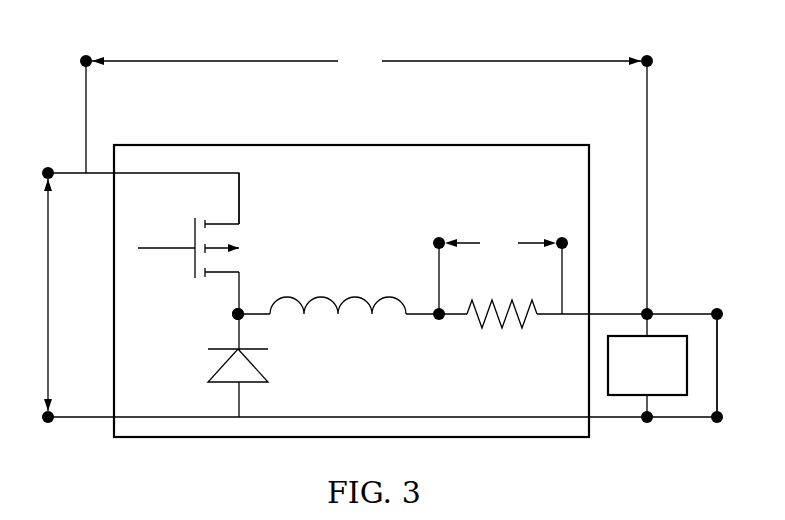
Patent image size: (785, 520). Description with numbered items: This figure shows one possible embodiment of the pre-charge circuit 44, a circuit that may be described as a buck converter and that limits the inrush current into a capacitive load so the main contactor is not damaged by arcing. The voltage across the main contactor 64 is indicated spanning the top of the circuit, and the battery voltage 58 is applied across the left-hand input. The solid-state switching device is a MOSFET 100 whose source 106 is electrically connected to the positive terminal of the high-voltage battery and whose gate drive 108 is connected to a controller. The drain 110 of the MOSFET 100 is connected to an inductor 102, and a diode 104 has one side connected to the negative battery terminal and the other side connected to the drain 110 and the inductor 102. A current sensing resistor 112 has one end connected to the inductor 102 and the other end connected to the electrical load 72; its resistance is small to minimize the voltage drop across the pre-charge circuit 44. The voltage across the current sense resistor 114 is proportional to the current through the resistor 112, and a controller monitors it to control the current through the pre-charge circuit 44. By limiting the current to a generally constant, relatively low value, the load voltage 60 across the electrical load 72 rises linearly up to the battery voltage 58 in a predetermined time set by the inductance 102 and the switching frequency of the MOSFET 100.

The pre-charge circuit 44 is at (385, 132).
The voltage across the main contactor 64 is at (412, 61).
The battery voltage 58 is at (48, 295).
The source 106 is at (239, 214).
The gate drive 108 is at (178, 246).
The MOSFET 100 is at (220, 251).
The drain 110 is at (236, 312).
The inductor 102 is at (354, 297).
The current sensing resistor 112 is at (520, 328).
The voltage across the current sense resistor 114 is at (528, 240).
The diode 104 is at (255, 362).
The electrical load 72 is at (647, 365).
The load voltage 60 is at (718, 332).